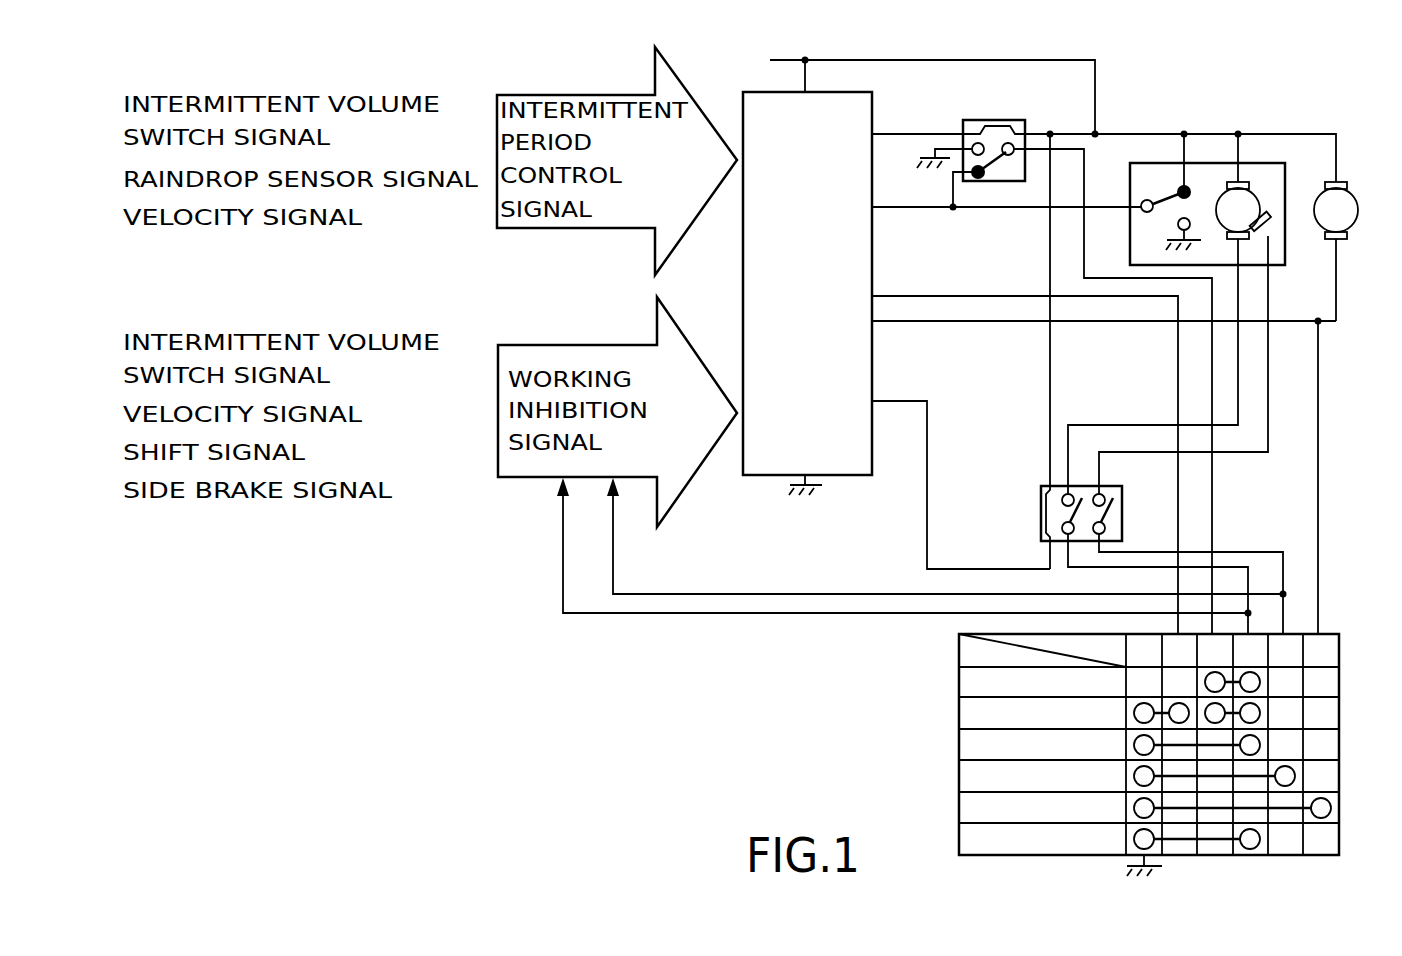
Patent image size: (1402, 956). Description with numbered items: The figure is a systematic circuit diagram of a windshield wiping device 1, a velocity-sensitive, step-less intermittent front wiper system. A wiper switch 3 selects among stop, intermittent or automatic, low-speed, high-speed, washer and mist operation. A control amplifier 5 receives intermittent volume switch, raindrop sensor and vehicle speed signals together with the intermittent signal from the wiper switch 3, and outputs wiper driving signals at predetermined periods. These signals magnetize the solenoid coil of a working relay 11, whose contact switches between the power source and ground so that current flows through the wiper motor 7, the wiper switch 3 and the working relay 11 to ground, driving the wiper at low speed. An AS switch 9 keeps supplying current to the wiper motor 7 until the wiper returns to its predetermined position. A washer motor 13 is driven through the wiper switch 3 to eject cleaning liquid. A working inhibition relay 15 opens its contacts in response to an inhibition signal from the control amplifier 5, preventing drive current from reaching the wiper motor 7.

The windshield wiping device 1 is at (1280, 87).
The wiper switch 3 is at (958, 655).
The control amplifier 5 is at (874, 95).
The wiper motor 7 is at (1224, 172).
The AS (auto stop) switch 9 is at (1167, 223).
The working relay 11 is at (1020, 119).
The washer motor 13 is at (1346, 234).
The working inhibition relay 15 is at (1041, 534).